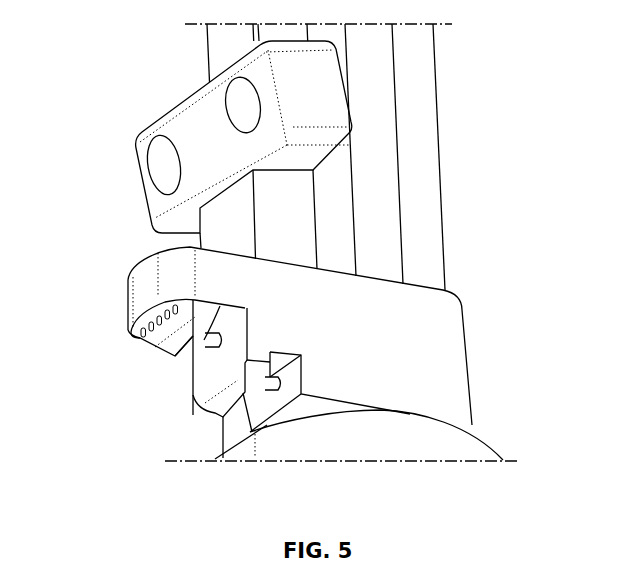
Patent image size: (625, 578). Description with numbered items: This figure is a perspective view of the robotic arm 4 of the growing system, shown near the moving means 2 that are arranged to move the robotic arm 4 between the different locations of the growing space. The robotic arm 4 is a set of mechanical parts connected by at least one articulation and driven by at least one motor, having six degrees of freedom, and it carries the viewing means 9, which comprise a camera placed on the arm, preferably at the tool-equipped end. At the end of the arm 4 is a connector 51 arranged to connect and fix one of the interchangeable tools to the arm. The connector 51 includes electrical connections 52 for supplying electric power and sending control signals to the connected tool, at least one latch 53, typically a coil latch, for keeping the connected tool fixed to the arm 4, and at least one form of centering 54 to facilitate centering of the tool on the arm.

The moving means 2 is at (422, 132).
The robotic arm 4 is at (217, 272).
The viewing means 9 is at (193, 130).
The connector 51 is at (135, 322).
The electrical connections 52 is at (141, 327).
The latch 53 is at (210, 343).
The form of centering 54 is at (177, 357).